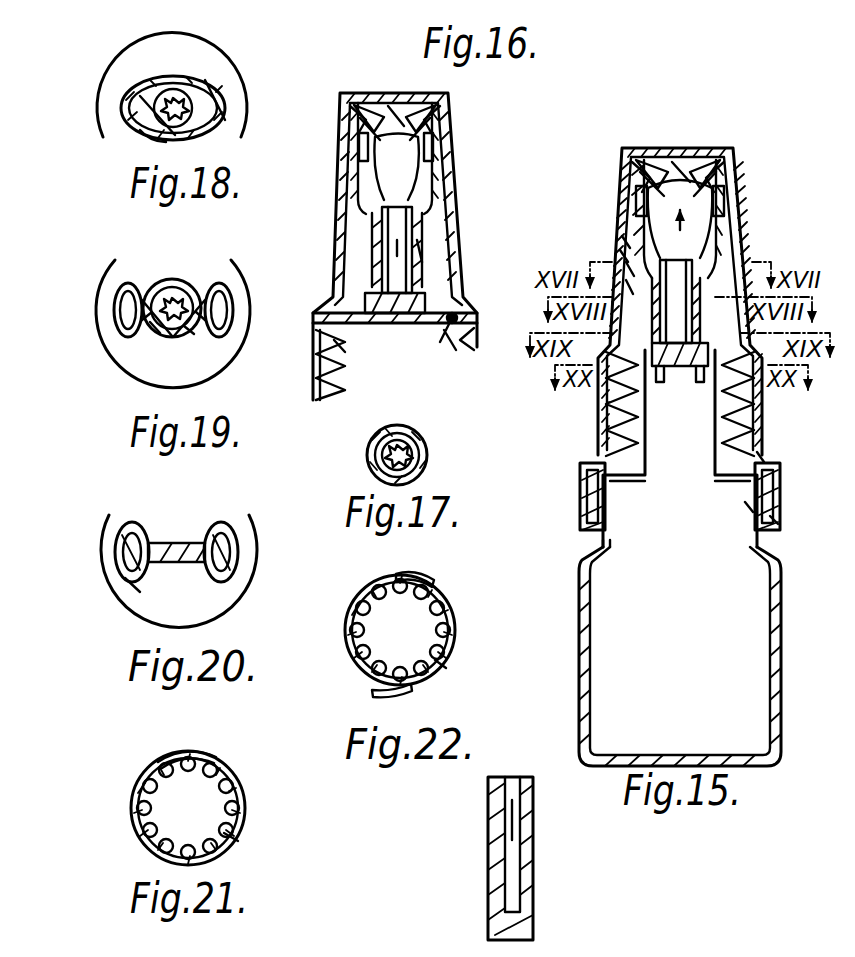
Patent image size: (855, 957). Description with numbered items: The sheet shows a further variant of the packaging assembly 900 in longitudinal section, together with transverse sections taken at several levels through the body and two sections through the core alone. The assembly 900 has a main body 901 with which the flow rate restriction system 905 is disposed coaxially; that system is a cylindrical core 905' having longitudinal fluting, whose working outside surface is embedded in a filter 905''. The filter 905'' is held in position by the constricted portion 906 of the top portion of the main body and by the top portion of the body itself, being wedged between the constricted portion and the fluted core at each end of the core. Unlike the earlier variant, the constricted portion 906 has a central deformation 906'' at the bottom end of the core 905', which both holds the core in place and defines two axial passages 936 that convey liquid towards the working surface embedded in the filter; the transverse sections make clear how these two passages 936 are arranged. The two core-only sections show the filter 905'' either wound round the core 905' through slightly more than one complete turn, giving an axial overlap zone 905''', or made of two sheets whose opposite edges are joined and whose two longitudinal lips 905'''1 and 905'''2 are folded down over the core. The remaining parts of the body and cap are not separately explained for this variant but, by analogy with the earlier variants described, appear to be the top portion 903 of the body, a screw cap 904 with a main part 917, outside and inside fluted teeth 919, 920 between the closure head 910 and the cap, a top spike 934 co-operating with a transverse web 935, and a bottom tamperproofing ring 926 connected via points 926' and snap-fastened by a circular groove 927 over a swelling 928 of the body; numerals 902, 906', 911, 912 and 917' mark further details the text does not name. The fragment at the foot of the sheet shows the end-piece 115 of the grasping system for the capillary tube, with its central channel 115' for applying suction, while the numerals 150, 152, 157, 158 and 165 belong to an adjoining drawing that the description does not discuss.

In FIG. 15, the packaging assembly 900 is at (566, 458).
In FIG. 15, the main body 901 is at (577, 634).
In FIG. 15, the container shoulder 902 is at (588, 578).
In FIG. 15, the container neck 903 is at (646, 418).
In FIG. 16, the container neck 903 is at (344, 348).
In FIG. 15, the cap housing 904 is at (614, 216).
In FIG. 16, the cap housing 904 is at (395, 246).
In FIG. 18, the cap housing 904 is at (133, 62).
In FIG. 19, the cap housing 904 is at (241, 282).
In FIG. 20, the cap housing 904 is at (221, 594).
In FIG. 15, the flow rate restriction system 905 is at (754, 245).
In FIG. 16, the flow rate restriction system 905 is at (452, 227).
In FIG. 21, the flow rate restriction system 905 is at (154, 808).
In FIG. 22, the flow rate restriction system 905 is at (372, 632).
In FIG. 15, the fluted cylindrical core 905' is at (724, 281).
In FIG. 16, the fluted cylindrical core 905' is at (444, 225).
In FIG. 17, the fluted cylindrical core 905' is at (438, 465).
In FIG. 18, the fluted cylindrical core 905' is at (204, 73).
In FIG. 19, the fluted cylindrical core 905' is at (162, 293).
In FIG. 21, the fluted cylindrical core 905' is at (207, 797).
In FIG. 22, the fluted cylindrical core 905' is at (429, 630).
In FIG. 16, the filter 905'' is at (468, 246).
In FIG. 17, the filter 905'' is at (360, 455).
In FIG. 18, the filter 905'' is at (130, 149).
In FIG. 19, the filter 905'' is at (218, 371).
In FIG. 21, the filter 905'' is at (267, 826).
In FIG. 22, the filter 905'' is at (471, 672).
In FIG. 15, the axial overlap zone 905''' is at (591, 234).
In FIG. 21, the axial overlap zone 905''' is at (153, 750).
In FIG. 22, the longitudinal lip 905'''1 is at (443, 574).
In FIG. 22, the longitudinal lip 905'''2 is at (351, 706).
In FIG. 16, the constricted portion 906 is at (345, 250).
In FIG. 19, the constricted portion 906 is at (120, 369).
In FIG. 15, the valve stem channel 906' is at (728, 269).
In FIG. 16, the valve stem channel 906' is at (354, 214).
In FIG. 17, the valve stem channel 906' is at (427, 449).
In FIG. 15, the central deformation 906'' is at (689, 393).
In FIG. 16, the central deformation 906'' is at (450, 345).
In FIG. 20, the central deformation 906'' is at (99, 603).
In FIG. 15, the top wall 910 is at (702, 158).
In FIG. 16, the top wall 910 is at (440, 106).
In FIG. 15, the right rib 911 is at (722, 196).
In FIG. 16, the right rib 911 is at (436, 165).
In FIG. 15, the seal 912 is at (716, 218).
In FIG. 15, the skirt 917 is at (649, 404).
In FIG. 16, the skirt 917 is at (300, 322).
In FIG. 15, the skirt upper part 917' is at (589, 404).
In FIG. 15, the left rib 919 is at (636, 192).
In FIG. 16, the left rib 919 is at (354, 165).
In FIG. 15, the outer wall 920 is at (633, 162).
In FIG. 16, the outer wall 920 is at (352, 118).
In FIG. 15, the neck ring 926 is at (704, 492).
In FIG. 15, the neck ring upper edge 926' is at (790, 443).
In FIG. 15, the neck ring lower edge 927 is at (772, 517).
In FIG. 15, the neck groove 928 is at (746, 505).
In FIG. 15, the dispensing orifice 934 is at (684, 162).
In FIG. 16, the dispensing orifice 934 is at (408, 78).
In FIG. 15, the valve seat 935 is at (660, 158).
In FIG. 16, the valve seat 935 is at (368, 102).
In FIG. 15, the axial passages 936 is at (628, 270).
In FIG. 18, the axial passages 936 is at (124, 92).
In FIG. 19, the axial passages 936 is at (118, 332).
In FIG. 20, the axial passages 936 is at (214, 543).
In FIG. 15, the end-piece 115 is at (533, 858).
In FIG. 15, the central channel 115' is at (551, 820).
In FIG. 15, the element 150 is at (389, 938).
In FIG. 15, the element 152 is at (669, 938).
In FIG. 15, the element 157 is at (444, 938).
In FIG. 15, the element 158 is at (559, 938).
In FIG. 15, the element 165 is at (609, 938).